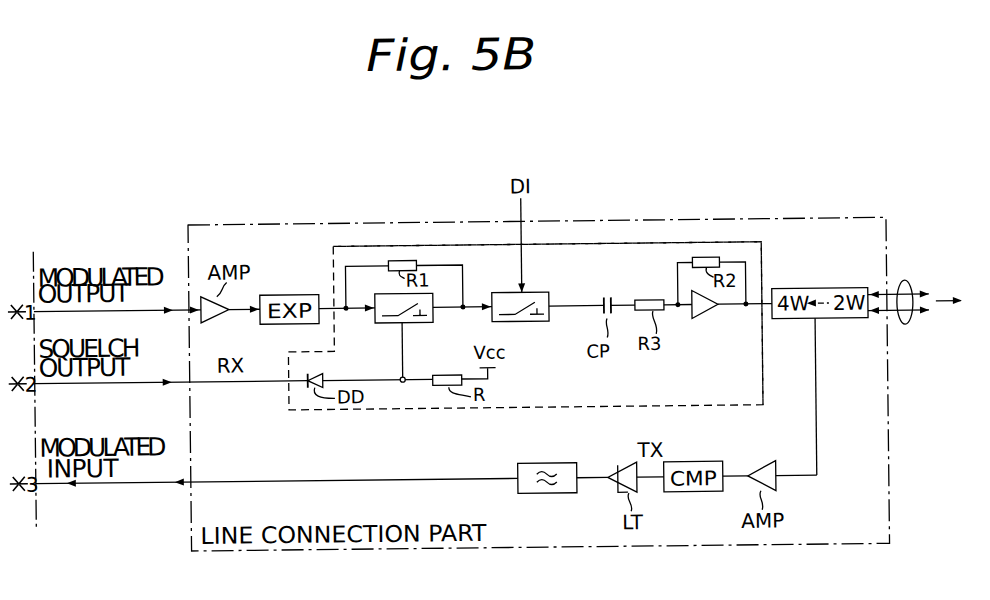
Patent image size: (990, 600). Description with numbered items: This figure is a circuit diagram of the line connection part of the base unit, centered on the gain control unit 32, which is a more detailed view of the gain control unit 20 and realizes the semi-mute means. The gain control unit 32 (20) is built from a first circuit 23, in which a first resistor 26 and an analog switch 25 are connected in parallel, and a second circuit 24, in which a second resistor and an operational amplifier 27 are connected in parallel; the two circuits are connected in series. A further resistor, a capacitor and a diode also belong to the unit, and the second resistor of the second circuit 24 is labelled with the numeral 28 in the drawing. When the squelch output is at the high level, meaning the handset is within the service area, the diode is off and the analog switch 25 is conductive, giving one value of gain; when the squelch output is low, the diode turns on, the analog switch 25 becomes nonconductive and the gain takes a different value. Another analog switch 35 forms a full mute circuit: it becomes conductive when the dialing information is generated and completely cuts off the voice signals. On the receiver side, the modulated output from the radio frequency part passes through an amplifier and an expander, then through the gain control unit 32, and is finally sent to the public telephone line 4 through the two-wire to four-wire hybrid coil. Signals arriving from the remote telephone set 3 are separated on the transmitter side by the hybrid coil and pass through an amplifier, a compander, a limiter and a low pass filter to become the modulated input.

The remote telephone set 3 is at (957, 301).
The public telephone line 4 is at (910, 289).
The gain control unit 20 is at (548, 326).
The first circuit 23 is at (360, 326).
The second circuit 24 is at (732, 324).
The analog switch 25 is at (417, 326).
The first resistor (R1) 26 is at (400, 262).
The operational amplifier 27 is at (704, 324).
The feedback resistor R2 28 is at (711, 263).
The gain control unit 32 is at (652, 245).
The analog switch 35 is at (547, 329).